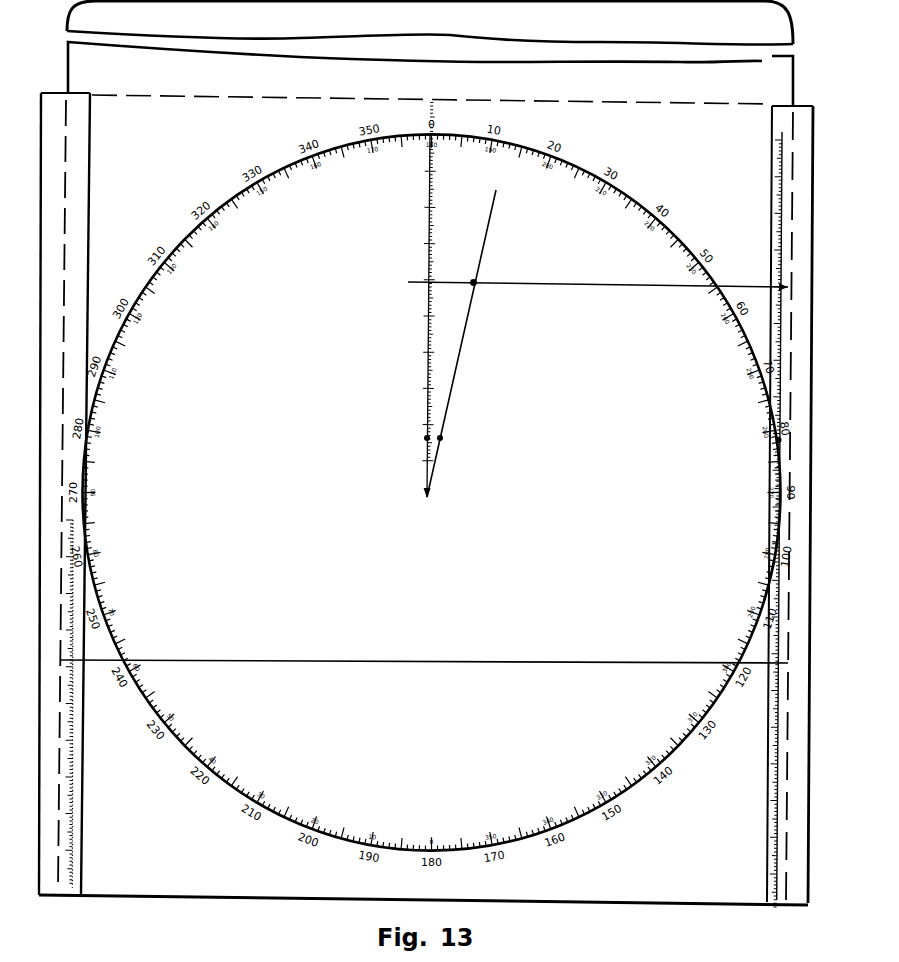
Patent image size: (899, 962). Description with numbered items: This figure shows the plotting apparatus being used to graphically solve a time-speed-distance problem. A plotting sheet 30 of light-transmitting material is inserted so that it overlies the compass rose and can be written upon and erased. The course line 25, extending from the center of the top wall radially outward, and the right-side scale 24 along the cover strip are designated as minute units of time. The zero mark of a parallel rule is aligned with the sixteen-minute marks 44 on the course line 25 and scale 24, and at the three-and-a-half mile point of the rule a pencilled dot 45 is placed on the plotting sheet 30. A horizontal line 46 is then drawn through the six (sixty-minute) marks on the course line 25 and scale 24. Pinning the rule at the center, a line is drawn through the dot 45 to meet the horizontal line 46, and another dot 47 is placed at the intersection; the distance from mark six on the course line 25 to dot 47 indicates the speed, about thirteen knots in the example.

The scale 24 is at (782, 215).
The course line 25 is at (430, 229).
The plotting sheet 30 is at (763, 68).
The marks 44 is at (424, 438).
The pencilled dot 45 is at (442, 438).
The horizontal line 46 is at (626, 287).
The dot 47 is at (478, 283).